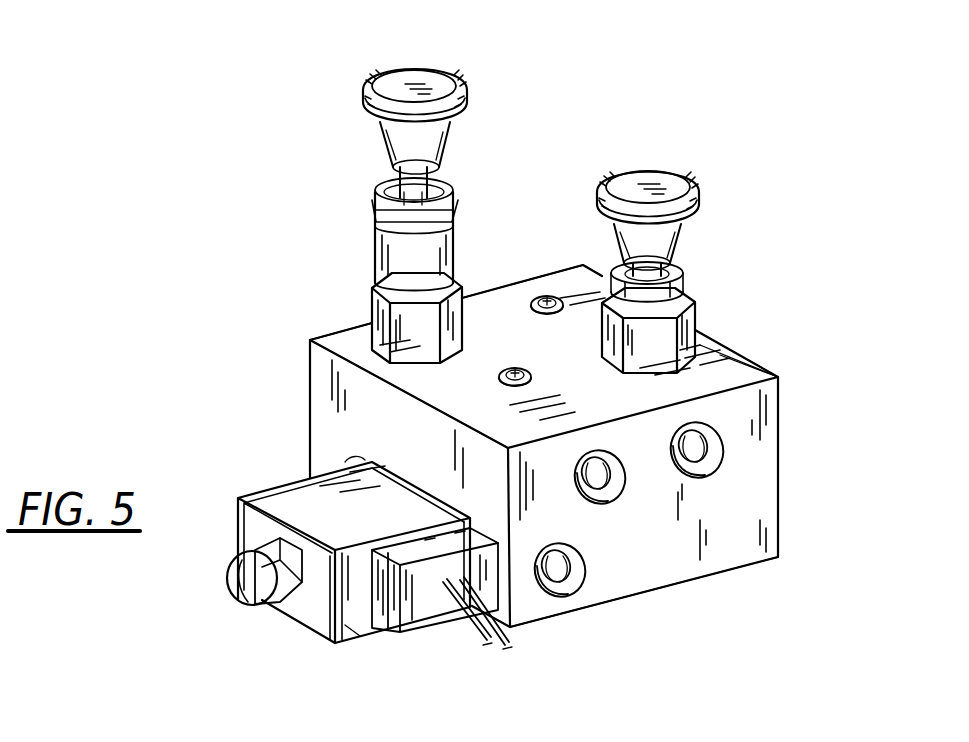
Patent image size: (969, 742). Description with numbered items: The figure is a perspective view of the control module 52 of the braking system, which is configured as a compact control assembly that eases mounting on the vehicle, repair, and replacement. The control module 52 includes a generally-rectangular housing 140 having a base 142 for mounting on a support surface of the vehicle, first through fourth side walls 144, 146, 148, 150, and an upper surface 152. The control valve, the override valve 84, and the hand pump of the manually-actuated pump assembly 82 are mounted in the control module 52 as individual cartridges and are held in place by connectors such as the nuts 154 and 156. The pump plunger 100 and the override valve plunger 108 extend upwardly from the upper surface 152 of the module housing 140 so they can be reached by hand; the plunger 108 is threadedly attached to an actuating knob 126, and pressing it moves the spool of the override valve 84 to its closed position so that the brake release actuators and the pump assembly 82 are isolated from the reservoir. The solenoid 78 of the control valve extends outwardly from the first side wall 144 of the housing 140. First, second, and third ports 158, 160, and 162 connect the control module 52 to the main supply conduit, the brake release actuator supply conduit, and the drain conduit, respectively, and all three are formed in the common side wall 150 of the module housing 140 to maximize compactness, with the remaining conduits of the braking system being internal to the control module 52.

The control module 52 is at (800, 330).
The solenoid 78 is at (337, 645).
The pump assembly 82 is at (463, 190).
The override valve 84 is at (692, 282).
The pump plunger 100 is at (392, 178).
The plunger 108 is at (610, 267).
The actuating knob 126 is at (413, 87).
The housing 140 is at (318, 337).
The base 142 is at (725, 570).
The first side wall 144 is at (340, 400).
The second side wall 146 is at (352, 328).
The third side wall 148 is at (722, 345).
The fourth side wall 150 is at (763, 535).
The upper surface 152 is at (757, 360).
The nut 154 is at (325, 354).
The nut 156 is at (690, 305).
The first port 158 is at (577, 588).
The second port 160 is at (623, 495).
The third port 162 is at (728, 468).